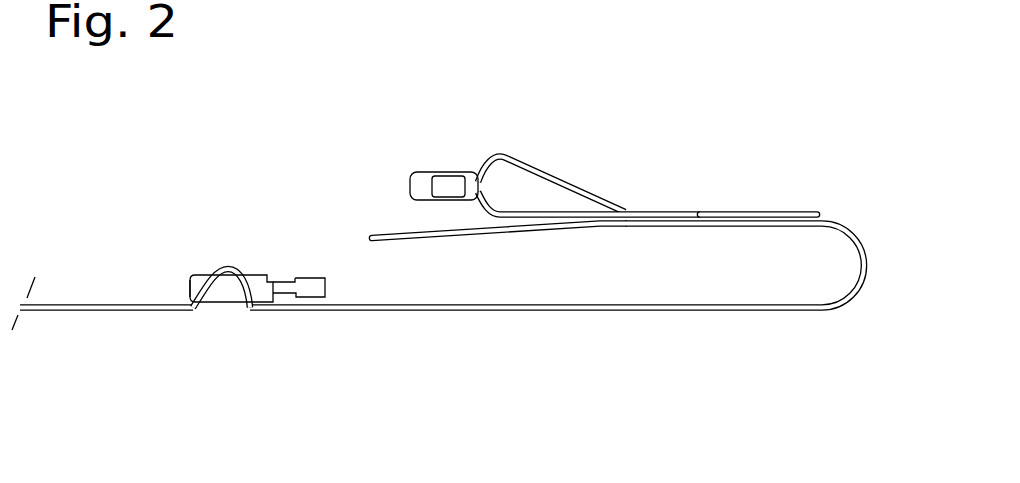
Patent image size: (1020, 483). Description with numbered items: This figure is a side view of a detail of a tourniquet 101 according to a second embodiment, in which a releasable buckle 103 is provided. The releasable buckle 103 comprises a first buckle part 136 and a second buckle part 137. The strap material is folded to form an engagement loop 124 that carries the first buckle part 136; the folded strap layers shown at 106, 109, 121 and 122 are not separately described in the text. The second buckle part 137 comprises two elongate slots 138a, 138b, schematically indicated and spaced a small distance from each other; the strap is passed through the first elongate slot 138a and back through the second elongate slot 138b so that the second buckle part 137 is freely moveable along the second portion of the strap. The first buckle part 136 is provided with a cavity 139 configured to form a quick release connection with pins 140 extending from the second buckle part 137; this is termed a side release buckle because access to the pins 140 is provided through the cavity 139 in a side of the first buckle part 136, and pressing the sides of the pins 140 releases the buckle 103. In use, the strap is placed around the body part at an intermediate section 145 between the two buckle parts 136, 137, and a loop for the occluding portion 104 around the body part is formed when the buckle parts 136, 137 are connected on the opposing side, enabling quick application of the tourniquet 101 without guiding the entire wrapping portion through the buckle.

The tourniquet 101 is at (190, 228).
The releasable buckle 103 is at (395, 175).
The occluding portion 104 is at (675, 365).
The lower strip 106 is at (368, 240).
The upper strip 109 is at (652, 211).
The strip end portion 121 is at (733, 211).
The fold loop 122 is at (852, 230).
The engagement loop 124 is at (525, 162).
The first buckle part 136 is at (420, 172).
The second buckle part 137 is at (267, 274).
The first elongate slot 138a is at (228, 267).
The second elongate slot 138b is at (190, 289).
The cavity 139 is at (447, 176).
The pins 140 is at (328, 289).
The intermediate section 145 is at (490, 311).